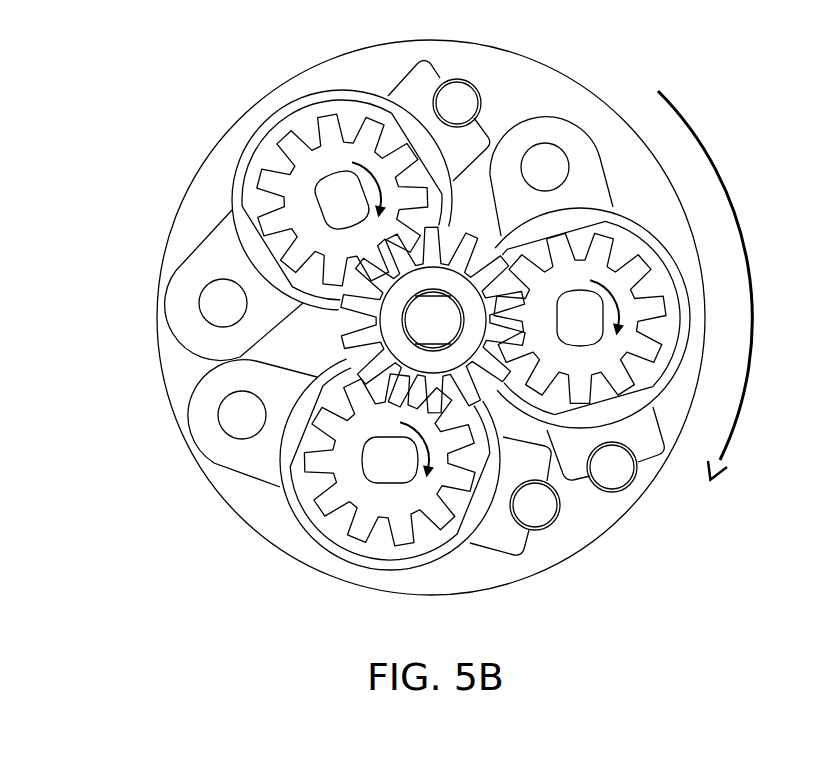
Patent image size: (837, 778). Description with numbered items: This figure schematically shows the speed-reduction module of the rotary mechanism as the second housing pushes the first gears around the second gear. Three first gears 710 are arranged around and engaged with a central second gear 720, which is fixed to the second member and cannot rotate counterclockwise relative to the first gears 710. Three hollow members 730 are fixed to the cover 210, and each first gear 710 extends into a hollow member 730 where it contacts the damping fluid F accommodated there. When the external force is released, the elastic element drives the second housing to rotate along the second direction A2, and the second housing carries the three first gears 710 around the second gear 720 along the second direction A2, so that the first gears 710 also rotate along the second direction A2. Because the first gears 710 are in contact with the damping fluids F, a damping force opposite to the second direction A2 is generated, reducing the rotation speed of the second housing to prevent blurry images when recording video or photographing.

The cover 210 is at (508, 82).
The first gear 710 is at (297, 157).
The second gear 720 is at (393, 315).
The hollow member 730 is at (192, 329).
The damping fluid F is at (235, 213).
The second direction A2 is at (752, 318).